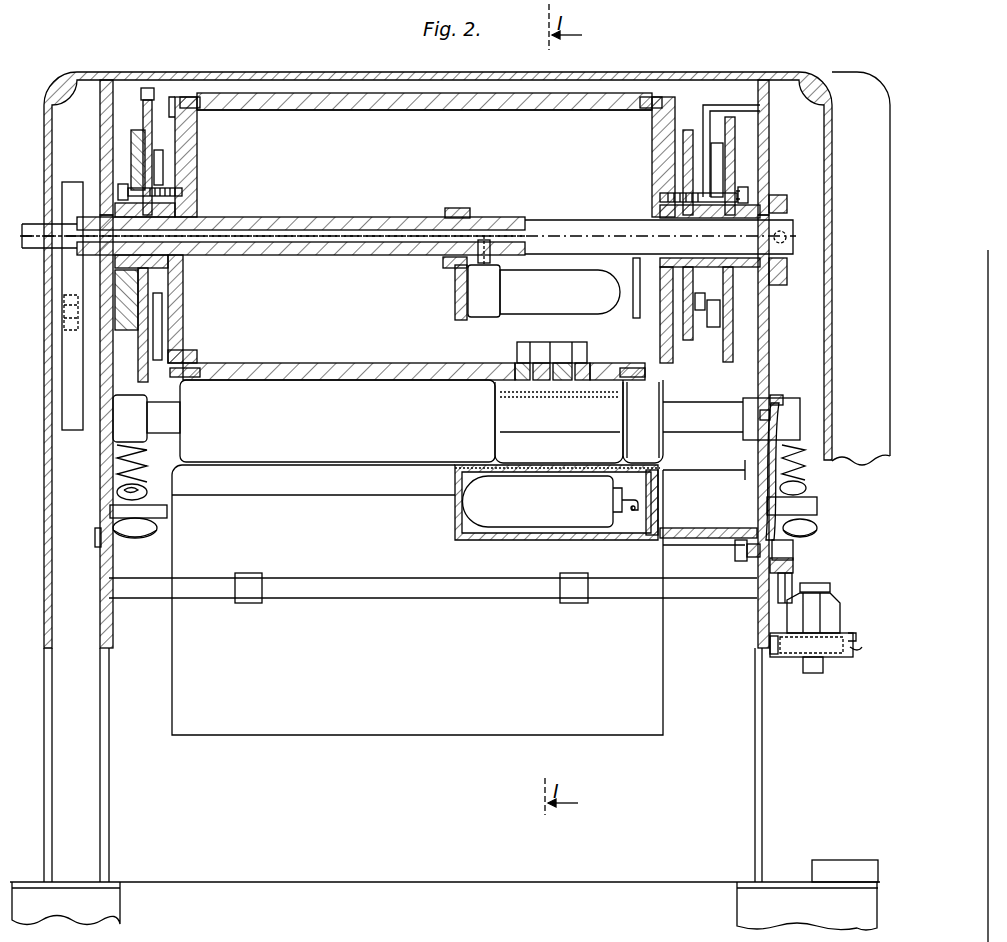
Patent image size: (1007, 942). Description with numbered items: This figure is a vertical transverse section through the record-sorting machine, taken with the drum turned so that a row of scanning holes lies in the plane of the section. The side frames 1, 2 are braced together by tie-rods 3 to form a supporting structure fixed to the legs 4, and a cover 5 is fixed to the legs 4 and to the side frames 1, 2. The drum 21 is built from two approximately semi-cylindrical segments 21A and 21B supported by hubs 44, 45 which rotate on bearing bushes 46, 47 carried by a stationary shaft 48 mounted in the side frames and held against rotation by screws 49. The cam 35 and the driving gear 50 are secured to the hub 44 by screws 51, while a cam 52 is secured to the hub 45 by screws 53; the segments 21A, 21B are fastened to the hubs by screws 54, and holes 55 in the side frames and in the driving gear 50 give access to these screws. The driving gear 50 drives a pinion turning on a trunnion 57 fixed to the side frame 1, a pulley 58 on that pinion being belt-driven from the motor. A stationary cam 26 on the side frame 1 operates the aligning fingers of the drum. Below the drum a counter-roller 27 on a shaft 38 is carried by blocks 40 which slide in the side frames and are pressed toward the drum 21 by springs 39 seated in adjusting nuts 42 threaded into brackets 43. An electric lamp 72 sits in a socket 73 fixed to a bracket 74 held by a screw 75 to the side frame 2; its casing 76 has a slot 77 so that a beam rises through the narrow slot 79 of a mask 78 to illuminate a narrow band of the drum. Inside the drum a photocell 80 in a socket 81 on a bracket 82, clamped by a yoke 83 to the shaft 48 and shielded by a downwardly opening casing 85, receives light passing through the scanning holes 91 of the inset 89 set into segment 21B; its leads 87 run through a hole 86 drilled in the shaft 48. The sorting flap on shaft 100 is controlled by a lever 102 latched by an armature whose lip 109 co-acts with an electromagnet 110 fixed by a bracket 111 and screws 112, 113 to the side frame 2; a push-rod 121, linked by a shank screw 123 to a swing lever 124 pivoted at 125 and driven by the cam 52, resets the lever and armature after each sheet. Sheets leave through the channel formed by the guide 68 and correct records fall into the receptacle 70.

The side frame 1 is at (102, 630).
The side frame 2 is at (760, 771).
The tie-rod 3 is at (117, 589).
The leg 4 is at (26, 896).
The cover 5 is at (340, 71).
The drum 21 is at (421, 230).
The cylindrical segment 21A is at (255, 94).
The cylindrical segment 21B is at (278, 364).
The stationary cam 26 is at (158, 150).
The counter-roller 27 is at (668, 392).
The cam 35 is at (131, 144).
The shaft 38 is at (710, 420).
The spring 39 is at (118, 491).
The block 40 is at (127, 421).
The adjusting nut 42 is at (113, 531).
The bracket 43 is at (110, 511).
The hub 44 is at (190, 149).
The hub 45 is at (663, 174).
The bearing bush 46 is at (183, 211).
The bearing bush 47 is at (663, 214).
The stationary shaft 48 is at (375, 221).
The screw 49 is at (77, 231).
The driving gear 50 is at (147, 89).
The screw 51 is at (118, 191).
The cam 52 is at (735, 134).
The screw 53 is at (748, 191).
The screw 54 is at (191, 97).
The hole 55 is at (106, 110).
The trunnion 57 is at (64, 311).
The pulley 58 is at (62, 372).
The guide 68 is at (313, 480).
The receptacle 70 is at (458, 597).
The electric lamp 72 is at (485, 488).
The socket 73 is at (635, 512).
The bracket 74 is at (690, 527).
The screw 75 is at (735, 553).
The casing 76 is at (455, 529).
The slot 77 is at (543, 466).
The mask 78 is at (598, 400).
The slot 79 is at (533, 400).
The photocell 80 is at (570, 303).
The socket 81 is at (487, 302).
The bracket 82 is at (455, 290).
The yoke 83 is at (462, 210).
The casing 85 is at (630, 300).
The hole 86 is at (312, 233).
The lead 87 is at (56, 240).
The inset 89 is at (581, 366).
The scanning hole 91 is at (532, 366).
The shaft 100 is at (97, 548).
The lever 102 is at (784, 600).
The lip 109 is at (830, 588).
The electromagnet 110 is at (830, 621).
The bracket 111 is at (842, 650).
The screw 112 is at (856, 642).
The screw 113 is at (777, 656).
The push-rod 121 is at (793, 549).
The shank screw 123 is at (793, 566).
The swing lever 124 is at (780, 429).
The pivot 125 is at (778, 397).